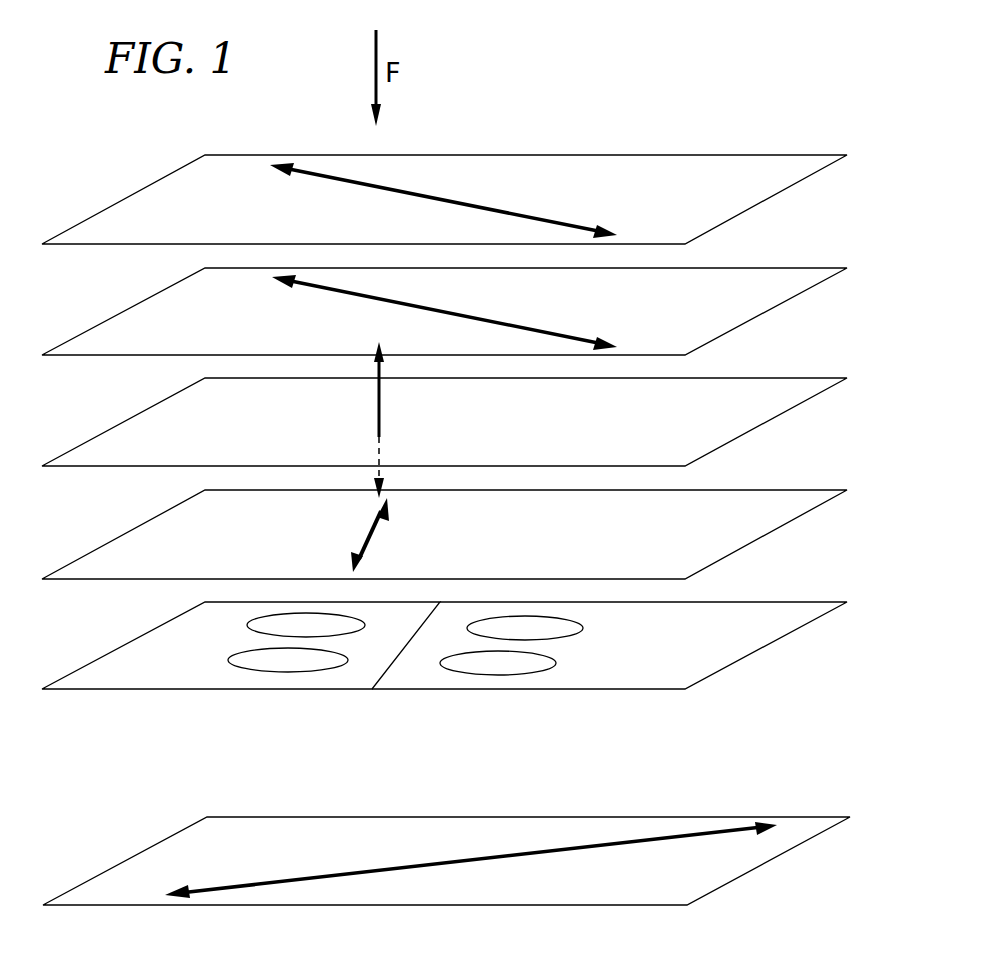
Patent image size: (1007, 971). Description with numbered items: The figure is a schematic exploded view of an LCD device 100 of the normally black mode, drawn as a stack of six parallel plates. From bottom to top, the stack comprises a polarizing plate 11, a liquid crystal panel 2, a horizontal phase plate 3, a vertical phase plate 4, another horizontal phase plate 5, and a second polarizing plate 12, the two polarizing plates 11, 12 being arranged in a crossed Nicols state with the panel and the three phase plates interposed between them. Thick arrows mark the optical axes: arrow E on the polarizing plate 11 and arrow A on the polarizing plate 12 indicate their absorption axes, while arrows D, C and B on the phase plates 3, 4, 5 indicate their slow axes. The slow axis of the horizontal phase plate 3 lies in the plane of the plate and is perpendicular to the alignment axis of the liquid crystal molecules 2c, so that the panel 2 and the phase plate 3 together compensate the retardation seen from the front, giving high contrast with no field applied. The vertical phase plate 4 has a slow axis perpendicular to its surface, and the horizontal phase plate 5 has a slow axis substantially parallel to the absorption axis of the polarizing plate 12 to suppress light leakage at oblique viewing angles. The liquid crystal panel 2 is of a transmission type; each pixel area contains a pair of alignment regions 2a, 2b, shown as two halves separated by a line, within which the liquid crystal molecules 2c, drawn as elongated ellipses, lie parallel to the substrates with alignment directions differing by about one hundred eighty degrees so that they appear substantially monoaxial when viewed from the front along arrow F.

The LCD device 100 is at (776, 134).
The polarizing plate 12 is at (773, 200).
The horizontal phase plate 5 is at (806, 294).
The vertical phase plate 4 is at (787, 416).
The horizontal phase plate 3 is at (808, 513).
The liquid crystal panel 2 is at (448, 681).
The alignment region 2a is at (363, 668).
The alignment region 2b is at (625, 667).
The liquid crystal molecules 2c is at (495, 666).
The polarizing plate 11 is at (820, 833).